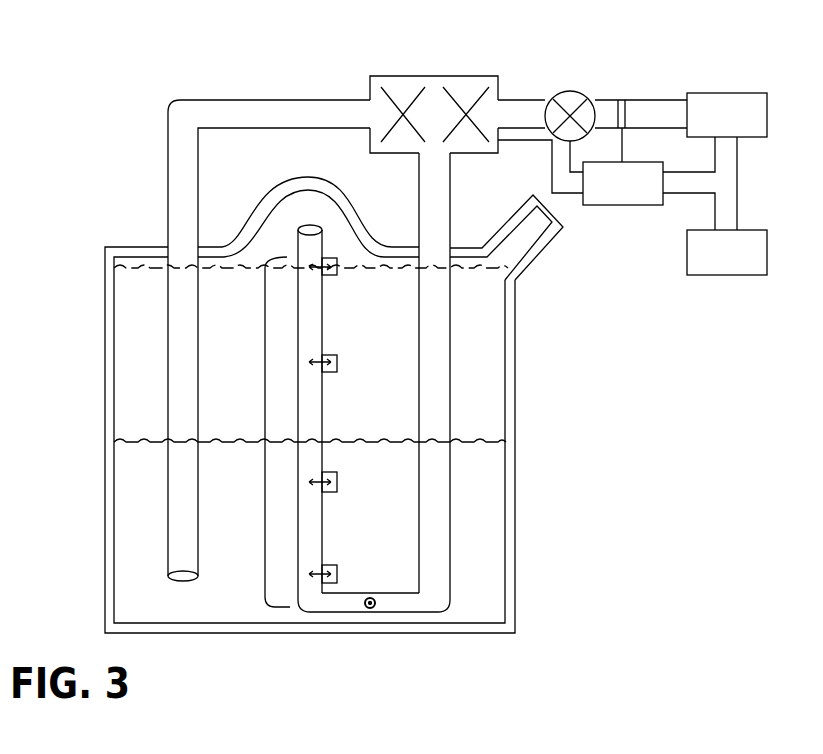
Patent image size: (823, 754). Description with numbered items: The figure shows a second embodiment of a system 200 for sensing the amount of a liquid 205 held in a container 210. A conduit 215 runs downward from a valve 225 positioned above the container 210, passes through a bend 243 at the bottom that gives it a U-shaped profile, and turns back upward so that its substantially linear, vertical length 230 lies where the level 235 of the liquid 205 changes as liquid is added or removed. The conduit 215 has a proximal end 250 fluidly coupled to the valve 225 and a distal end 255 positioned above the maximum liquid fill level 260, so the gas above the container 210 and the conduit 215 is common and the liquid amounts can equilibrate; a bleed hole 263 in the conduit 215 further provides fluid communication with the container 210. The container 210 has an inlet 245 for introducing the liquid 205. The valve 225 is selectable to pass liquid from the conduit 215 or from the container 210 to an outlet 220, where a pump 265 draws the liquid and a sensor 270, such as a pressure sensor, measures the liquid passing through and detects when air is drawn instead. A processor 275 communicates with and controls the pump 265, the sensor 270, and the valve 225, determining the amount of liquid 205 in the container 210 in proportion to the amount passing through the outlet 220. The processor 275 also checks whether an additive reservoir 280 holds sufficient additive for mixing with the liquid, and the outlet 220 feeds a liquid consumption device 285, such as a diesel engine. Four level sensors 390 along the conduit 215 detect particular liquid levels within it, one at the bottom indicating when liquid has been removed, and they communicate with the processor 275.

The system 200 is at (163, 66).
The liquid 205 is at (127, 492).
The container 210 is at (105, 553).
The conduit 215 is at (450, 522).
The outlet 220 is at (523, 100).
The valve 225 is at (440, 76).
The length 230 is at (265, 373).
The level 235 is at (150, 442).
The bend 243 is at (422, 612).
The inlet 245 is at (543, 252).
The proximal end 250 is at (417, 195).
The distal end 255 is at (302, 227).
The maximum liquid fill level 260 is at (127, 268).
The bleed hole 263 is at (369, 609).
The pump 265 is at (571, 91).
The sensor 270 is at (624, 100).
The processor 275 is at (605, 196).
The additive reservoir 280 is at (709, 264).
The liquid consumption device 285 is at (709, 126).
The level sensors 390 is at (337, 275).